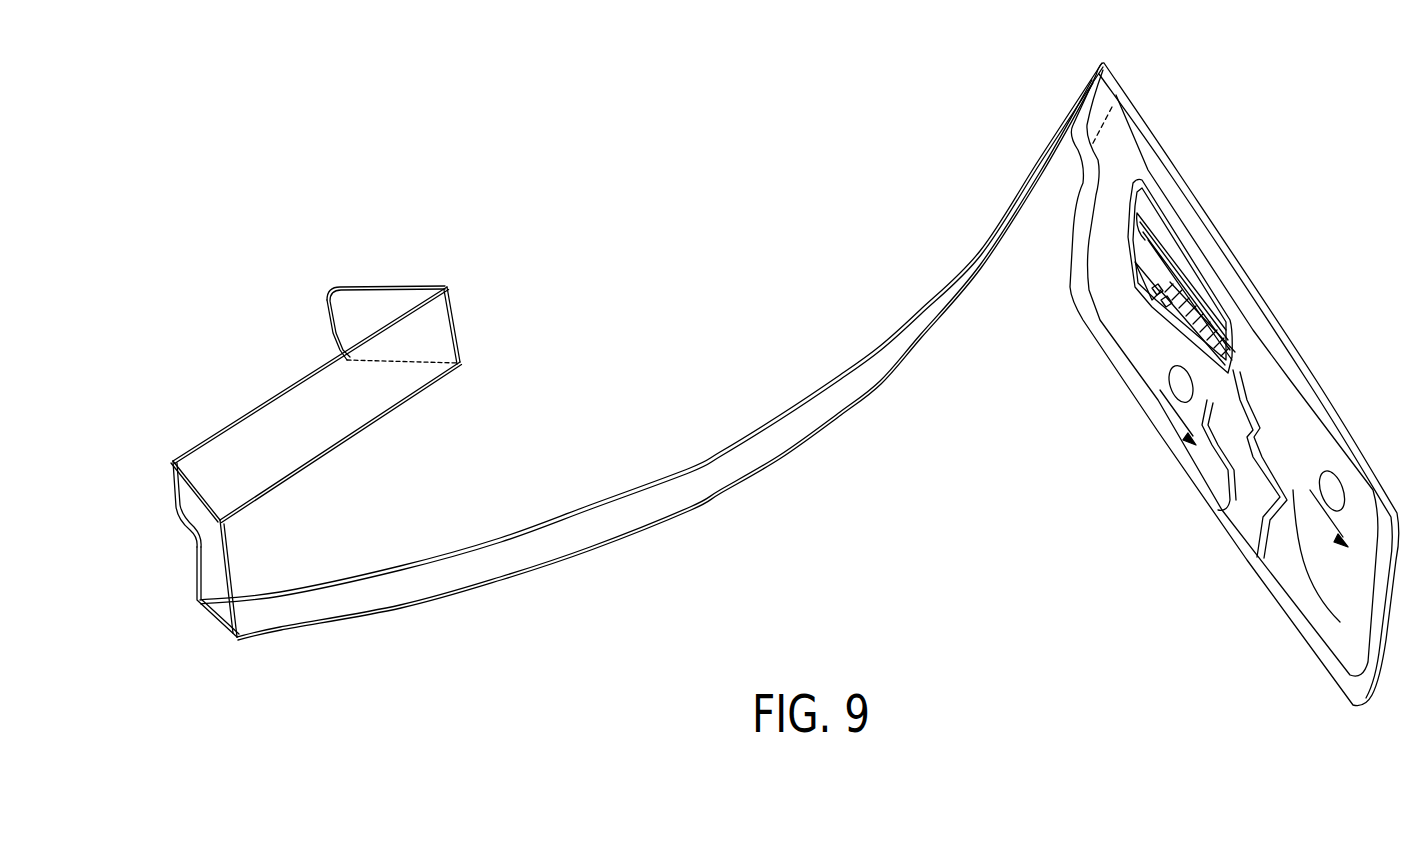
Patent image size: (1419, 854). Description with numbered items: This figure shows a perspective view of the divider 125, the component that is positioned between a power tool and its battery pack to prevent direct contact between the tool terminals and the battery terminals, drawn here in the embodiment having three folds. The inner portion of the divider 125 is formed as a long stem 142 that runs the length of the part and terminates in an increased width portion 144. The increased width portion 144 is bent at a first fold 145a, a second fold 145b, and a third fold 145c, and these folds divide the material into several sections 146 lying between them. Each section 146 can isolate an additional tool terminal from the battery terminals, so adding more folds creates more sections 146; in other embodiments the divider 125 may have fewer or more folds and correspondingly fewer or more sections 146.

The divider 125 is at (766, 384).
The stem 142 is at (707, 463).
The increased width portion 144 is at (262, 403).
The first fold 145a is at (215, 625).
The second fold 145b is at (170, 458).
The third fold 145c is at (446, 286).
The sections 146 is at (377, 283).